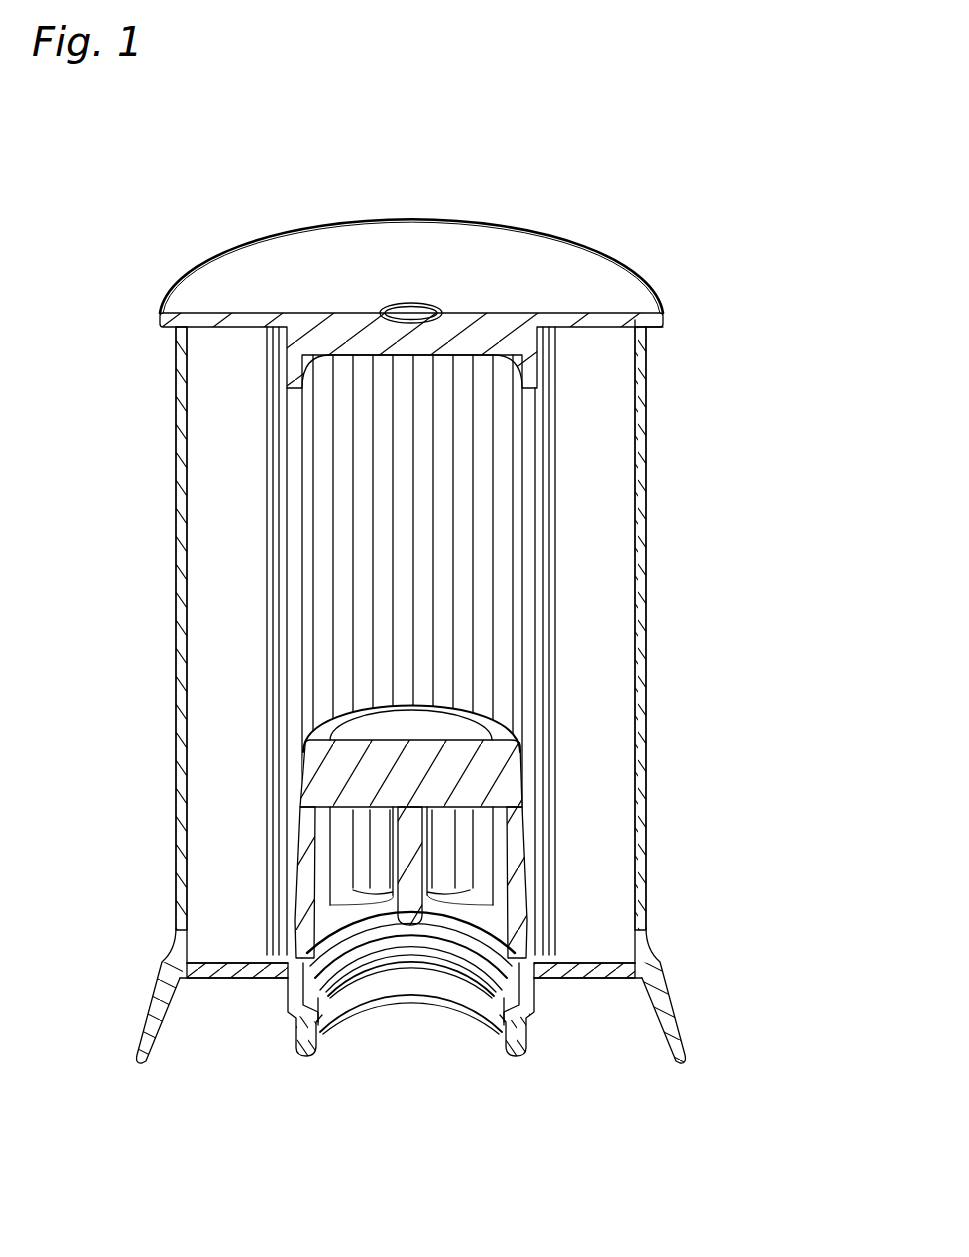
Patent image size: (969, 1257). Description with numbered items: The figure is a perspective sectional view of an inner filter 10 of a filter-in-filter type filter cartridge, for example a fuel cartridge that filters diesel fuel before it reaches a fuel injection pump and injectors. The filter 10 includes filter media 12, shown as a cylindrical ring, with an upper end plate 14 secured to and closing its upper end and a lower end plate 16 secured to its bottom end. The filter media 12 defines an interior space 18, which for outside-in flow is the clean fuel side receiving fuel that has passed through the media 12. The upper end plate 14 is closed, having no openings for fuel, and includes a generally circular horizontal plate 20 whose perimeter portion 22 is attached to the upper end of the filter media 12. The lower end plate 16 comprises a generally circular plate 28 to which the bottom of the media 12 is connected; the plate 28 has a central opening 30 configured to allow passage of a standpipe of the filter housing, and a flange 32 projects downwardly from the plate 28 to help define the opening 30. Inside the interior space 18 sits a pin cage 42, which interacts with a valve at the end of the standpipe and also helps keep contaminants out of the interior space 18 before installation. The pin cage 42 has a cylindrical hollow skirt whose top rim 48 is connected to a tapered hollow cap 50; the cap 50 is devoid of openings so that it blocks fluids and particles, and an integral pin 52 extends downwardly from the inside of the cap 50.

The inner filter 10 is at (728, 395).
The filter media 12 is at (592, 565).
The upper end plate 14 is at (610, 248).
The lower end plate 16 is at (660, 941).
The interior space 18 is at (305, 568).
The horizontal plate 20 is at (268, 292).
The perimeter portion 22 is at (626, 314).
The circular plate 28 is at (590, 980).
The central opening 30 is at (356, 993).
The flange 32 is at (460, 1012).
The pin cage 42 is at (506, 723).
The top rim 48 is at (535, 803).
The cap 50 is at (430, 724).
The pin 52 is at (411, 926).